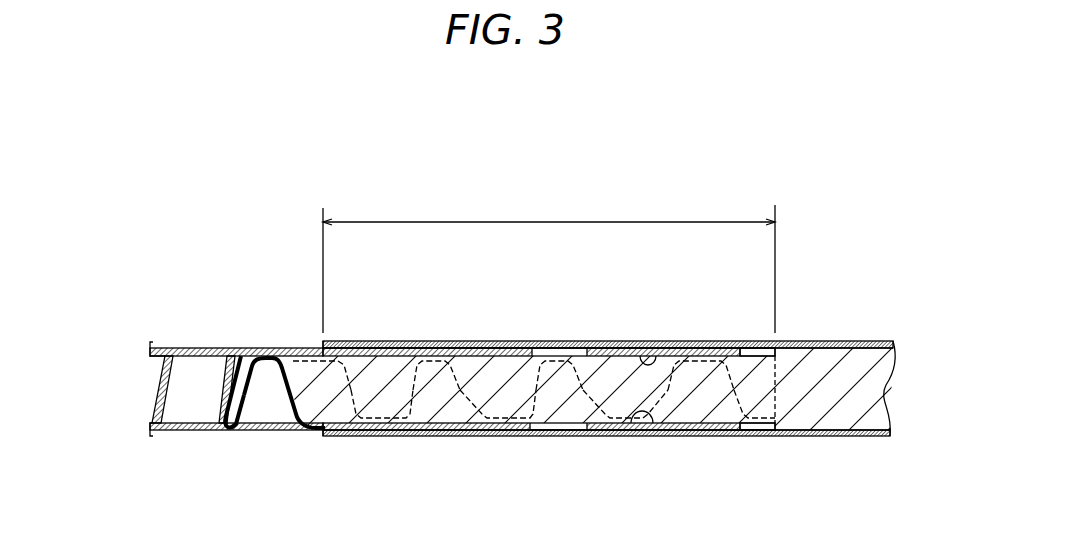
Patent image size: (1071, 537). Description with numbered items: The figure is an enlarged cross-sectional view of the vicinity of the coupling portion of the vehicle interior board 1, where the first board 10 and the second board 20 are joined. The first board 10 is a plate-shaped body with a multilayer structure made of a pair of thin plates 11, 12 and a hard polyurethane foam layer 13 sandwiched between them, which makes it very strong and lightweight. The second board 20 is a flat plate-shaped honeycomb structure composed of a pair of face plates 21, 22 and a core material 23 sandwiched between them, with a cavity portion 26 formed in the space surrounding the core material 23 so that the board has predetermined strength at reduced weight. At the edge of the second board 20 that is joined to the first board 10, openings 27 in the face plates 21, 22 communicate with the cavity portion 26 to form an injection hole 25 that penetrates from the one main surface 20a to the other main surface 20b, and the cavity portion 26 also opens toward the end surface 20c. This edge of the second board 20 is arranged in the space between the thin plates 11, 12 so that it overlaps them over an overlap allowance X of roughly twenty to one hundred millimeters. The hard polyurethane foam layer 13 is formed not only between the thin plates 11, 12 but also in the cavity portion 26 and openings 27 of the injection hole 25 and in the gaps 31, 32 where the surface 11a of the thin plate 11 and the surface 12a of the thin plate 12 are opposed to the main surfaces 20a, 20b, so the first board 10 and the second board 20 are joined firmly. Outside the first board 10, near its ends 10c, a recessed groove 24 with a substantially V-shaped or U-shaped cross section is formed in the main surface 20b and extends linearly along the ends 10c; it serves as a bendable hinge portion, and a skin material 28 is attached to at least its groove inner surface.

The vehicle interior board 1 is at (225, 152).
The first board 10 is at (837, 218).
The ends of the first board 10c is at (323, 348).
The thin plate 11 is at (843, 342).
The surface of the thin plate 11a is at (655, 352).
The thin plate 12 is at (790, 436).
The surface of the thin plate 12a is at (652, 430).
The hard polyurethane foam layer 13 is at (855, 392).
The second board 20 is at (172, 228).
The one main surface 20a is at (228, 348).
The other main surface 20b is at (182, 431).
The end surface 20c is at (798, 348).
The face plate 21 is at (172, 348).
The face plate 22 is at (162, 432).
The core material 23 is at (156, 392).
The recessed groove 24 is at (266, 398).
The injection hole 25 is at (562, 391).
The cavity portion 26 is at (710, 402).
The openings 27 is at (572, 348).
The skin material 28 is at (245, 428).
The gap 31 is at (472, 348).
The gap 32 is at (457, 436).